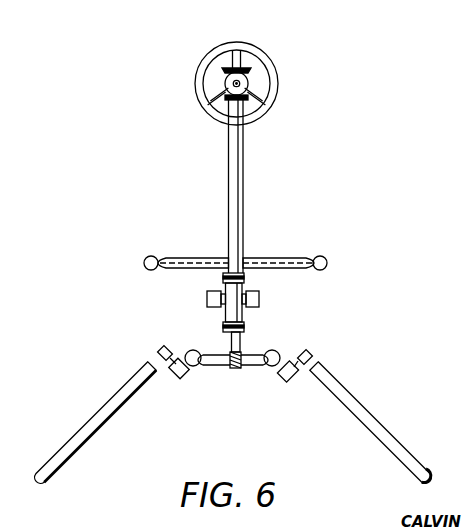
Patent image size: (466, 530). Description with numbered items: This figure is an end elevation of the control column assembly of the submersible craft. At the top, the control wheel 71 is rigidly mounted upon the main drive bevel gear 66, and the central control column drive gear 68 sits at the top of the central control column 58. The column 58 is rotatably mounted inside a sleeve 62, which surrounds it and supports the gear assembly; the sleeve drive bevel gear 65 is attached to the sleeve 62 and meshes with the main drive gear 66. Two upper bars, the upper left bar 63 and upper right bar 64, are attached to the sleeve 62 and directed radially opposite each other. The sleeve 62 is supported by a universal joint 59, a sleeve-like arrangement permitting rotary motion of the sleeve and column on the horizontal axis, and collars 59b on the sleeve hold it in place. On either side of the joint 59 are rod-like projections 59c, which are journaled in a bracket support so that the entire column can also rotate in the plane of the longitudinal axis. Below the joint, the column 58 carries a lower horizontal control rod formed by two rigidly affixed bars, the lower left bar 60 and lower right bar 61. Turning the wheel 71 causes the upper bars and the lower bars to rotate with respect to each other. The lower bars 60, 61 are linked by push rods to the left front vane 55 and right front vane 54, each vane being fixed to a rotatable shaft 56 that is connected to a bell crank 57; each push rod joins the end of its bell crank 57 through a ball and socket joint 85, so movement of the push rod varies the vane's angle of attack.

The left front vane 54 is at (367, 409).
The right front vane 55 is at (100, 410).
The rotatable shaft 56 is at (160, 351).
The bell crank 57 is at (170, 372).
The central control column 58 is at (240, 352).
The universal joint 59 is at (243, 312).
The collar 59b is at (223, 276).
The rod like projection 59c is at (207, 300).
The lower left bar 60 is at (246, 366).
The lower right bar 61 is at (212, 366).
The sleeve 62 is at (243, 178).
The upper left bar 63 is at (297, 257).
The upper right bar 64 is at (190, 257).
The sleeve drive bevel gear 65 is at (258, 100).
The main drive bevel gear 66 is at (248, 82).
The central control column drive gear 68 is at (242, 68).
The control wheel 71 is at (268, 58).
The ball and socket joint 85 is at (192, 350).